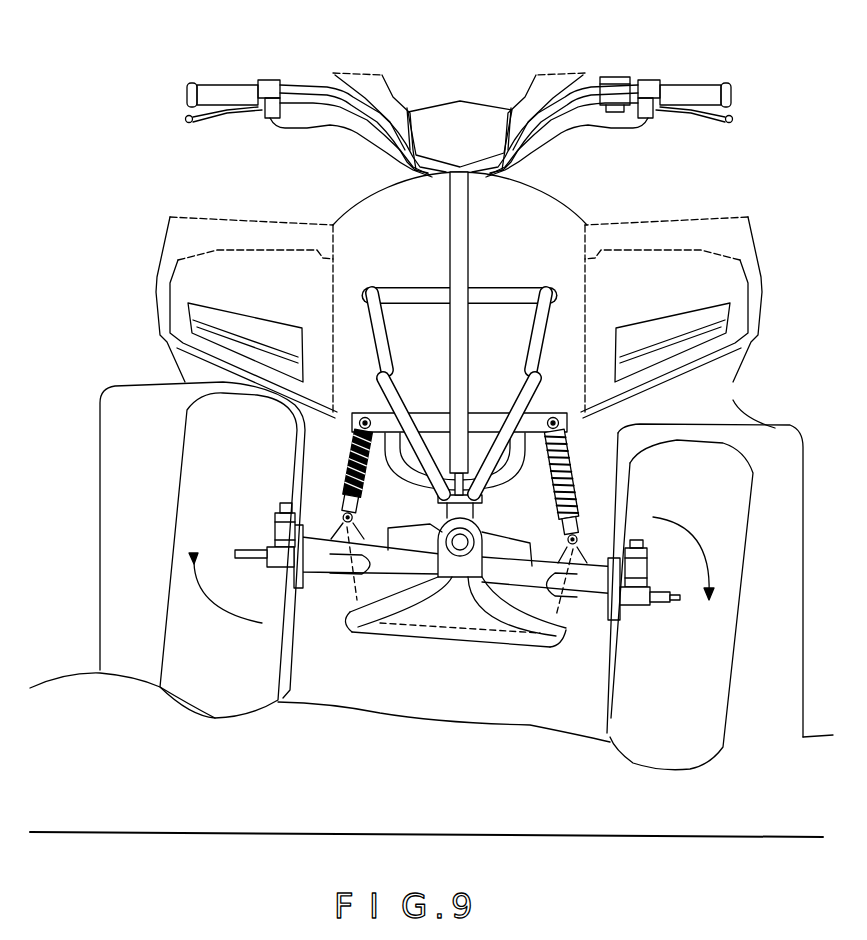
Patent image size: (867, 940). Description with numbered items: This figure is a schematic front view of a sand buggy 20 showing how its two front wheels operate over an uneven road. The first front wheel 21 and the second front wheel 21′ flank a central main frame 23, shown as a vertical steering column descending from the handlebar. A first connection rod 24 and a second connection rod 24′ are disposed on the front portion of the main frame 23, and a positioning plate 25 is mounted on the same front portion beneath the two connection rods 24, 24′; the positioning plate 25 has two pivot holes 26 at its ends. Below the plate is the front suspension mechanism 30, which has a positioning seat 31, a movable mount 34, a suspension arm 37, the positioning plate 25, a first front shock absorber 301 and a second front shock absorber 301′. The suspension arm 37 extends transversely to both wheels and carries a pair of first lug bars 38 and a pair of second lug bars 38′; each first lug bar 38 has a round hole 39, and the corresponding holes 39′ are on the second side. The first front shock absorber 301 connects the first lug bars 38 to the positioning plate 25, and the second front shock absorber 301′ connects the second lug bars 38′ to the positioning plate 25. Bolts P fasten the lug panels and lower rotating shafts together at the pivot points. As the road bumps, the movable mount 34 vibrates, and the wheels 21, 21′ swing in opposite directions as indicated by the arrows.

The vehicle front / handlebar assembly 20 is at (455, 82).
The first front wheel 21 is at (210, 707).
The second front wheel 21′ is at (662, 757).
The main frame 23 is at (486, 297).
The first connection rod 24 is at (390, 387).
The second connection rod 24′ is at (523, 393).
The positioning plate 25 is at (478, 423).
The pivot holes 26 is at (363, 418).
The front suspension mechanism 30 is at (535, 660).
The positioning seat 31 is at (447, 430).
The movable mount 34 is at (413, 533).
The suspension arm 37 is at (403, 557).
The first lug bars 38 is at (336, 530).
The second lug bars 38′ is at (582, 560).
The round hole 39 is at (345, 563).
The right tie rod 39′ is at (571, 550).
The first front shock absorber 301 is at (345, 458).
The second front shock absorber 301′ is at (580, 462).
The bolts P is at (355, 425).